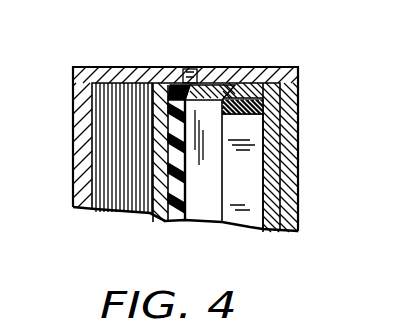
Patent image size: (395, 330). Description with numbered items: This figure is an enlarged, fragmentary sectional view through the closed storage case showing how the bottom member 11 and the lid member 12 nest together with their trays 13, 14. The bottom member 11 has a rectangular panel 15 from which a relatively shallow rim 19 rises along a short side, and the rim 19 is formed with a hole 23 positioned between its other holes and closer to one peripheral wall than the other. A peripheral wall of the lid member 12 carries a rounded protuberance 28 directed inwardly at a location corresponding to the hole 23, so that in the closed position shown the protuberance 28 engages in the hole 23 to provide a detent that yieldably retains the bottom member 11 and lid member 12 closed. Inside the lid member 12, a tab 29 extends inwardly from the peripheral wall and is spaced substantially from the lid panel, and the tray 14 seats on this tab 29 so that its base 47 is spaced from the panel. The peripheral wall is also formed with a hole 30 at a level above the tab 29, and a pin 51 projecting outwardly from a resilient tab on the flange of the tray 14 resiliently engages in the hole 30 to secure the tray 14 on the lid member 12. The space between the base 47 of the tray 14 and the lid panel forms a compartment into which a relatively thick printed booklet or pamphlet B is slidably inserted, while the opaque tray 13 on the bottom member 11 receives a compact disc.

The bottom member 11 is at (298, 138).
The lid member 12 is at (73, 142).
The tray 13 is at (253, 215).
The tray 14 is at (205, 218).
The panel 15 is at (296, 192).
The rim 19 is at (236, 70).
The hole 23 is at (298, 82).
The protuberance 28 is at (260, 70).
The tab 29 is at (160, 110).
The hole 30 is at (188, 68).
The base 47 is at (165, 222).
The pin 51 is at (192, 70).
The booklet or pamphlet B is at (105, 182).